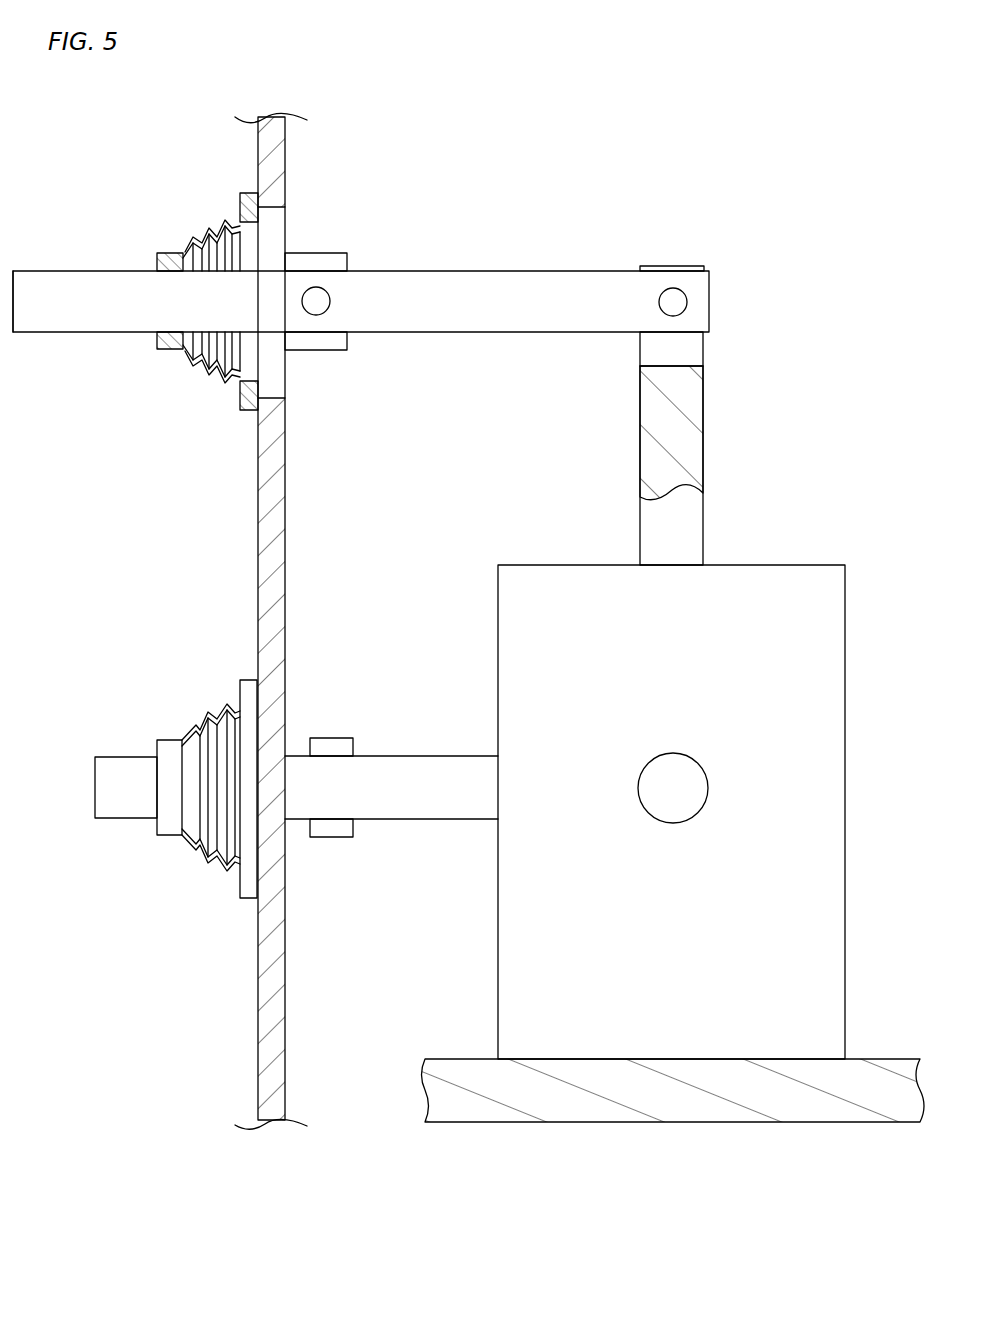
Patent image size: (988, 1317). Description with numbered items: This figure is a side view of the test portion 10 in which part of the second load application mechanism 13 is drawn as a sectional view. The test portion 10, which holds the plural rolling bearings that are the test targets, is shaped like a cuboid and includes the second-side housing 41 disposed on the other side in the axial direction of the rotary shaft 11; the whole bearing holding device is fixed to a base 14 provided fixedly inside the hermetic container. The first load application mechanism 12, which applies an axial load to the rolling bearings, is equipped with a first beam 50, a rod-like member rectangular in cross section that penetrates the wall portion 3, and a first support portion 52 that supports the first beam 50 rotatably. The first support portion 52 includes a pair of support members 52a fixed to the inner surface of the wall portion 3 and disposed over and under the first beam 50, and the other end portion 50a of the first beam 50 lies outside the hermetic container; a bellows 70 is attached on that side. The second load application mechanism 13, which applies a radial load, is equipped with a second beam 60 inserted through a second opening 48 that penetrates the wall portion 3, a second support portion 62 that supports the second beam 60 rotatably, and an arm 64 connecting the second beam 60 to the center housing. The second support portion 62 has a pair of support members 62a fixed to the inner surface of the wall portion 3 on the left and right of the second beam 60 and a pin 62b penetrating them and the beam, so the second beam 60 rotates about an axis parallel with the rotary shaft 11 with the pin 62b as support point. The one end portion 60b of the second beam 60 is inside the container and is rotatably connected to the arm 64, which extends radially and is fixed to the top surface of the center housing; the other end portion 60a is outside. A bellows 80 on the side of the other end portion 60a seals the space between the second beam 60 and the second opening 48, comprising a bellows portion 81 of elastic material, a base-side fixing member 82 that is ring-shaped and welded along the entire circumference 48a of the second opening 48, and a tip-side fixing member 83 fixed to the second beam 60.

The wall portion 3 is at (239, 621).
The test portion 10 is at (645, 757).
The rotary shaft 11 is at (655, 772).
The first load application mechanism 12 is at (296, 781).
The second load application mechanism 13 is at (557, 215).
The base 14 is at (572, 1105).
The second-side housing 41 is at (515, 625).
The second opening 48 is at (239, 255).
The circumference of the second opening 48a is at (220, 162).
The first beam 50 is at (296, 826).
The other end portion of the first beam 50a is at (120, 800).
The first support portion 52 is at (375, 786).
The support members 52a is at (345, 750).
The second beam 60 is at (363, 261).
The other end portion of the second beam 60a is at (44, 290).
The one end portion of the second beam 60b is at (696, 285).
The second support portion 62 is at (357, 295).
The support members 62a is at (332, 342).
The pin 62b is at (316, 306).
The arm 64 is at (695, 400).
The bellows 70 is at (208, 868).
The bellows 80 is at (169, 301).
The bellows portion 81 is at (190, 242).
The base-side fixing member 82 is at (240, 205).
The tip-side fixing member 83 is at (157, 262).